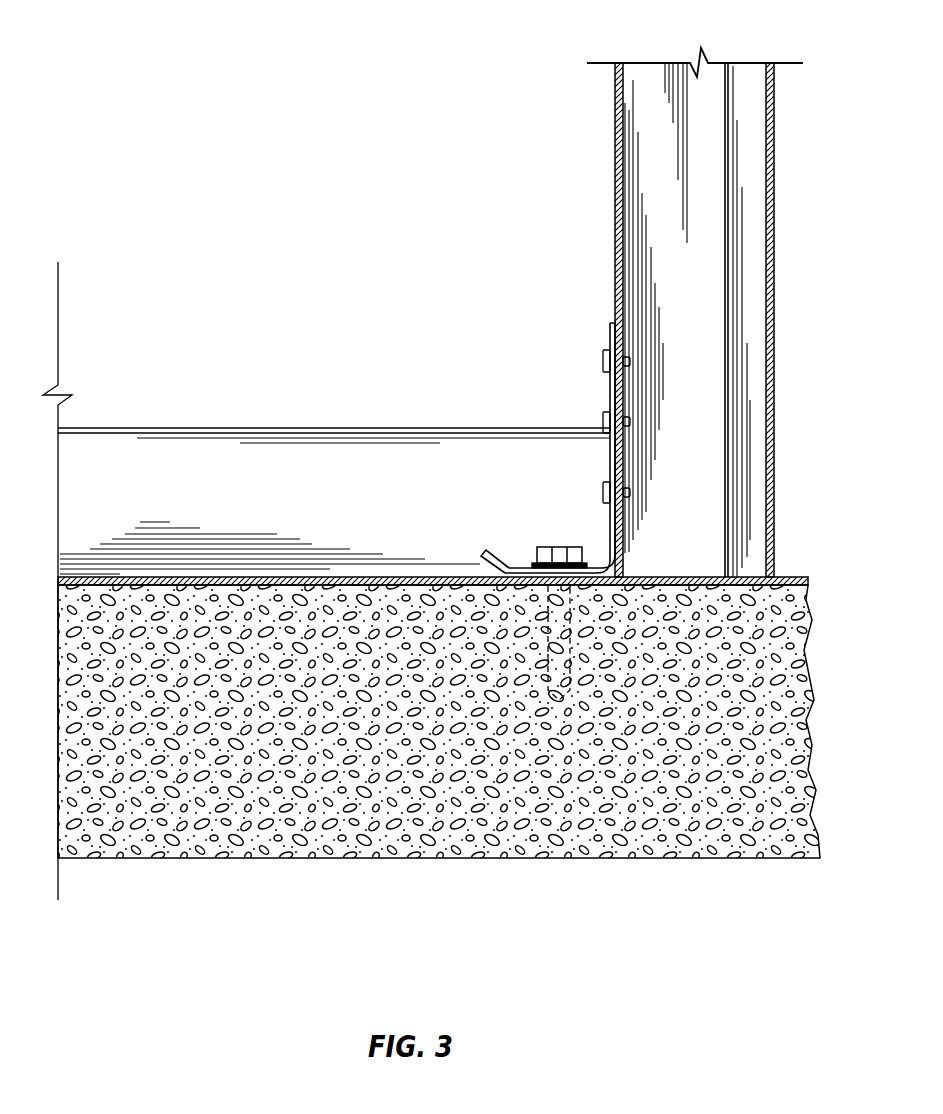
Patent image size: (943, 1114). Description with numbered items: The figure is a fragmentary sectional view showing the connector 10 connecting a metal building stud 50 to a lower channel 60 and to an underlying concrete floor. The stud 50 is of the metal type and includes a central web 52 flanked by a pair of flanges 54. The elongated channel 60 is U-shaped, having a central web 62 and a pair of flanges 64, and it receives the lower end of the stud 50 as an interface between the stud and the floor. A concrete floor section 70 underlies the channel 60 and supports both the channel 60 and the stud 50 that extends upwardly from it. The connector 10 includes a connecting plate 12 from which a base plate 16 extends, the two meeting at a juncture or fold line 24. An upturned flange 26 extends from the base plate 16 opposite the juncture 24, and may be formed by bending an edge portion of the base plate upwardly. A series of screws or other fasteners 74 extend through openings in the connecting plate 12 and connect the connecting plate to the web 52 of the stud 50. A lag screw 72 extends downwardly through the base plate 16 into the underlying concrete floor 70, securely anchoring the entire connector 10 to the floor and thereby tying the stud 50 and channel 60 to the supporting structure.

The connector 10 is at (537, 448).
The connecting plate 12 is at (609, 387).
The base plate 16 is at (522, 568).
The juncture 24 is at (604, 558).
The upturned flange 26 is at (485, 556).
The stud 50 is at (705, 299).
The central web 52 is at (614, 156).
The flanges 54 is at (712, 75).
The channel 60 is at (334, 459).
The central web 62 is at (100, 578).
The flanges 64 is at (253, 450).
The concrete floor section 70 is at (770, 693).
The lag screw 72 is at (570, 657).
The fasteners 74 is at (600, 353).